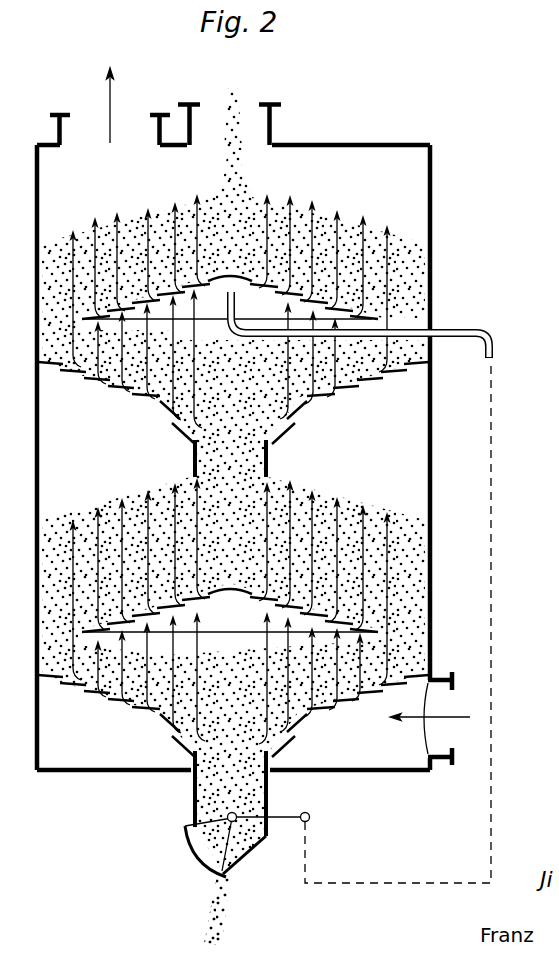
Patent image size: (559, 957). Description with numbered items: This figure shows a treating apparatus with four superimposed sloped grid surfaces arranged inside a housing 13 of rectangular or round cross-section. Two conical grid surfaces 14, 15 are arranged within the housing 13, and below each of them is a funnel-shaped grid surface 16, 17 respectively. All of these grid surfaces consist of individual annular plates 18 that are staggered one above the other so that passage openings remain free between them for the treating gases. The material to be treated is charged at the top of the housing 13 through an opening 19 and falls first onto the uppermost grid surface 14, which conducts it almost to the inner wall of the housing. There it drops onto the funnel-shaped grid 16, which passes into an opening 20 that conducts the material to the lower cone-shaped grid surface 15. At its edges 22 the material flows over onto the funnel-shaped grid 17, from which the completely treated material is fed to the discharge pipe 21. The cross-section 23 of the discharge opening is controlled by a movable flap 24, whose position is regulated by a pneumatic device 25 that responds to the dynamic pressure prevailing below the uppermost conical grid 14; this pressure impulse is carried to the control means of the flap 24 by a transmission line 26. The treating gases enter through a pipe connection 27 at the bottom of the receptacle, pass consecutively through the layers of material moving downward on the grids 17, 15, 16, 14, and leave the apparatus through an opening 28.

The housing 13 is at (437, 152).
The uppermost conical grid surface 14 is at (262, 292).
The lower cone-shaped grid surface 15 is at (273, 600).
The funnel-shaped grid surface 16 is at (350, 390).
The funnel-shaped grid surface 17 is at (345, 700).
The annular plates 18 is at (168, 290).
The opening 19 is at (275, 130).
The opening 20 is at (270, 456).
The discharge pipe 21 is at (270, 807).
The edges 22 is at (372, 627).
The cross-section of the opening 23 is at (226, 876).
The movable flap 24 is at (190, 849).
The pneumatic device 25 is at (236, 322).
The transmission line 26 is at (495, 805).
The pipe connection 27 is at (440, 700).
The opening 28 is at (130, 115).